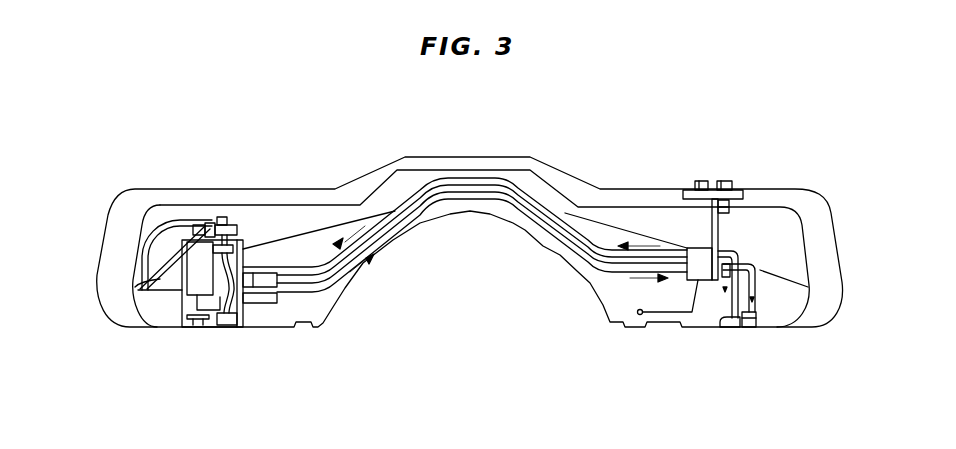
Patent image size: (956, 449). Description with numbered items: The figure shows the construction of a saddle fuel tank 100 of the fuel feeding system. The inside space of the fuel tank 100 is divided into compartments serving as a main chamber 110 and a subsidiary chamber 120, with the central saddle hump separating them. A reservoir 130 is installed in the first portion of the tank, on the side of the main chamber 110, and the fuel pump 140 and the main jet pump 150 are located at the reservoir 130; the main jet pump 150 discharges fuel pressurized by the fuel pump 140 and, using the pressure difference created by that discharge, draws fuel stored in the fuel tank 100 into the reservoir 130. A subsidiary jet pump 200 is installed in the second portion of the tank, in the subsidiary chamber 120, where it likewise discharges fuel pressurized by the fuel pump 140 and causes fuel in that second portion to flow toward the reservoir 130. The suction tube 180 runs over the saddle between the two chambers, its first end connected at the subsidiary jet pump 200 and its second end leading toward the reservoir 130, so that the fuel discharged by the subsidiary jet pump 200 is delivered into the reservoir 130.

The fuel tank 100 is at (372, 171).
The main chamber 110 is at (283, 225).
The subsidiary chamber 120 is at (653, 227).
The reservoir 130 is at (182, 308).
The fuel pump 140 is at (200, 248).
The main jet pump 150 is at (223, 316).
The suction tube 180 is at (570, 253).
The subsidiary jet pump 200 is at (722, 333).